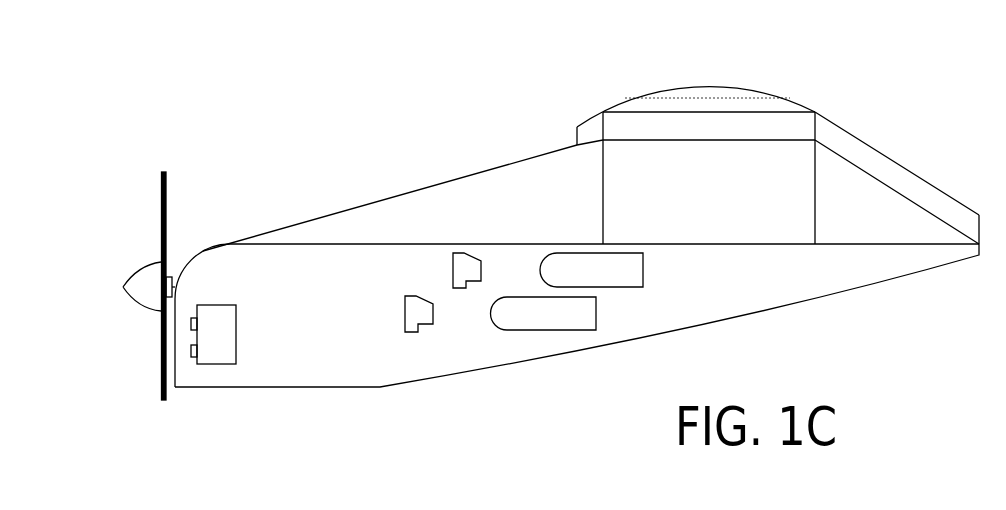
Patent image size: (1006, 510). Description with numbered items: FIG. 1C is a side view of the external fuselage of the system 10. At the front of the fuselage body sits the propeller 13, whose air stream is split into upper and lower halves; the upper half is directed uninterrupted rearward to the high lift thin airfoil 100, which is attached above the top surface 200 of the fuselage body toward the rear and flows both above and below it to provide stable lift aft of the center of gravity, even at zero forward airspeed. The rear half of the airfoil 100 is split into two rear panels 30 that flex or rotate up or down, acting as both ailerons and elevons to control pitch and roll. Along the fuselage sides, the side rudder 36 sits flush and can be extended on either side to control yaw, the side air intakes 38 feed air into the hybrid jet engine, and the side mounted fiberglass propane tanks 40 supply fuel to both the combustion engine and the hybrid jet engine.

The system 10 is at (194, 124).
The propeller 13 is at (160, 218).
The rear panels 30 is at (945, 193).
The side rudder 36 is at (217, 348).
The side air intakes 38 is at (417, 320).
The side mounted fiberglass propane tanks 40 is at (625, 273).
The high lift thin airfoil 100 is at (793, 100).
The top surface 200 is at (715, 132).